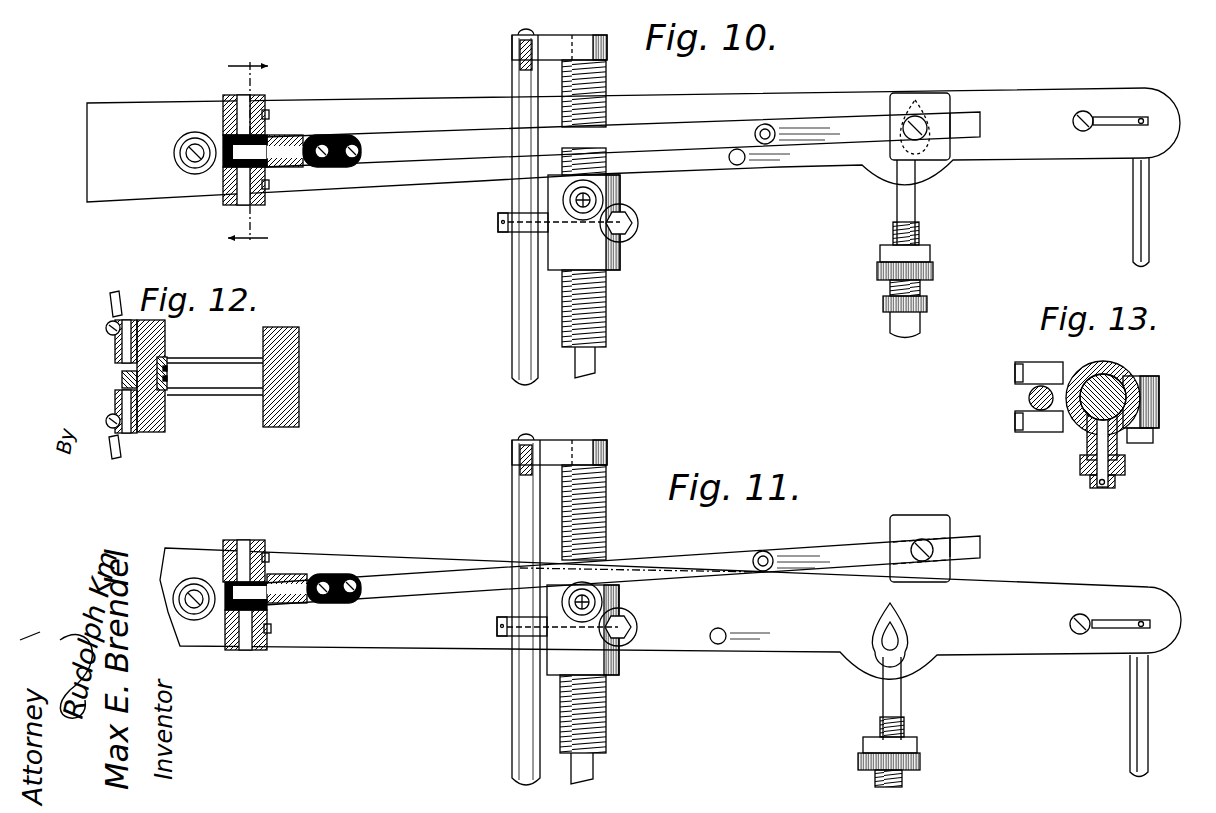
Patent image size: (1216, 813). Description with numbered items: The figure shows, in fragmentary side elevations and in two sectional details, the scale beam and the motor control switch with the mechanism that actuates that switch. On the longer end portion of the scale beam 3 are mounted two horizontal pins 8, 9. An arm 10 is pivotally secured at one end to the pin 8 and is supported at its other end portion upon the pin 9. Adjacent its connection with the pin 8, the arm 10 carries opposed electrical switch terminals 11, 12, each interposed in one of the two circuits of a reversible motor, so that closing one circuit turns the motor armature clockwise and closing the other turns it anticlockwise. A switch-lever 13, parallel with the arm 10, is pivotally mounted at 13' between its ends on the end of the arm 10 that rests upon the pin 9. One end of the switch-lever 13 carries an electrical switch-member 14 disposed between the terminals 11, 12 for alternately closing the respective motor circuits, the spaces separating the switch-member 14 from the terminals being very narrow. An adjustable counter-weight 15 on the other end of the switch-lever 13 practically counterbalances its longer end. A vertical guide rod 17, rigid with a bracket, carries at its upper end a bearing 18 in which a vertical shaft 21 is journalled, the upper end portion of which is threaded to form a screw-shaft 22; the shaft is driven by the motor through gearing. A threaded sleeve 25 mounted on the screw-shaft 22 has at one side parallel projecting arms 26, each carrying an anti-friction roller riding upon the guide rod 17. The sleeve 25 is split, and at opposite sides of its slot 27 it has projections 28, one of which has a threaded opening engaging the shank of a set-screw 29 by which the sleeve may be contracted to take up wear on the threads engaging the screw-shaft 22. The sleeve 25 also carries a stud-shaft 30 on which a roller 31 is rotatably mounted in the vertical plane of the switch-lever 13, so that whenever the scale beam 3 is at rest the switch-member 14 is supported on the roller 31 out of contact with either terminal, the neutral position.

In FIG. 10, the scale beam 3 is at (86, 193).
In FIG. 11, the scale beam 3 is at (846, 652).
In FIG. 10, the horizontal pin 8 is at (183, 170).
In FIG. 11, the horizontal pin 8 is at (188, 580).
In FIG. 12, the horizontal pin 8 is at (196, 395).
In FIG. 10, the horizontal pin 9 is at (738, 166).
In FIG. 11, the horizontal pin 9 is at (718, 645).
In FIG. 10, the arm 10 is at (786, 124).
In FIG. 11, the arm 10 is at (777, 553).
In FIG. 12, the arm 10 is at (168, 361).
In FIG. 10, the electrical switch terminal 11 is at (243, 201).
In FIG. 11, the electrical switch terminal 11 is at (244, 652).
In FIG. 12, the electrical switch terminal 11 is at (120, 394).
In FIG. 10, the electrical switch terminal 12 is at (240, 96).
In FIG. 11, the electrical switch terminal 12 is at (241, 548).
In FIG. 12, the electrical switch terminal 12 is at (120, 354).
In FIG. 10, the switch-lever 13 is at (622, 167).
In FIG. 11, the switch-lever 13 is at (622, 561).
In FIG. 10, the pivot 13' is at (768, 105).
In FIG. 11, the pivot 13' is at (755, 540).
In FIG. 10, the electrical switch-member 14 is at (266, 152).
In FIG. 11, the electrical switch-member 14 is at (267, 586).
In FIG. 12, the electrical switch-member 14 is at (122, 379).
In FIG. 10, the adjustable counter-weight 15 is at (946, 106).
In FIG. 11, the adjustable counter-weight 15 is at (955, 567).
In FIG. 10, the vertical guide rod 17 is at (512, 293).
In FIG. 11, the vertical guide rod 17 is at (513, 778).
In FIG. 13, the vertical guide rod 17 is at (1028, 398).
In FIG. 10, the bearing 18 is at (552, 40).
In FIG. 11, the bearing 18 is at (553, 452).
In FIG. 10, the vertical shaft 21 is at (597, 378).
In FIG. 11, the vertical shaft 21 is at (595, 780).
In FIG. 10, the screw-shaft 22 is at (605, 326).
In FIG. 11, the screw-shaft 22 is at (603, 534).
In FIG. 13, the screw-shaft 22 is at (1124, 384).
In FIG. 10, the threaded sleeve 25 is at (625, 258).
In FIG. 11, the threaded sleeve 25 is at (621, 679).
In FIG. 13, the threaded sleeve 25 is at (1114, 361).
In FIG. 10, the projecting arms 26 is at (565, 226).
In FIG. 11, the projecting arms 26 is at (553, 633).
In FIG. 13, the projecting arms 26 is at (1072, 368).
In FIG. 10, the slot 27 is at (638, 233).
In FIG. 13, the slot 27 is at (1118, 397).
In FIG. 10, the projections 28 is at (630, 238).
In FIG. 11, the projections 28 is at (626, 616).
In FIG. 13, the projections 28 is at (1156, 381).
In FIG. 10, the set-screw 29 is at (640, 222).
In FIG. 11, the set-screw 29 is at (638, 627).
In FIG. 13, the set-screw 29 is at (1150, 443).
In FIG. 10, the stud-shaft 30 is at (590, 218).
In FIG. 11, the stud-shaft 30 is at (592, 595).
In FIG. 13, the stud-shaft 30 is at (1104, 488).
In FIG. 10, the roller 31 is at (604, 197).
In FIG. 11, the roller 31 is at (605, 590).
In FIG. 13, the roller 31 is at (1125, 468).